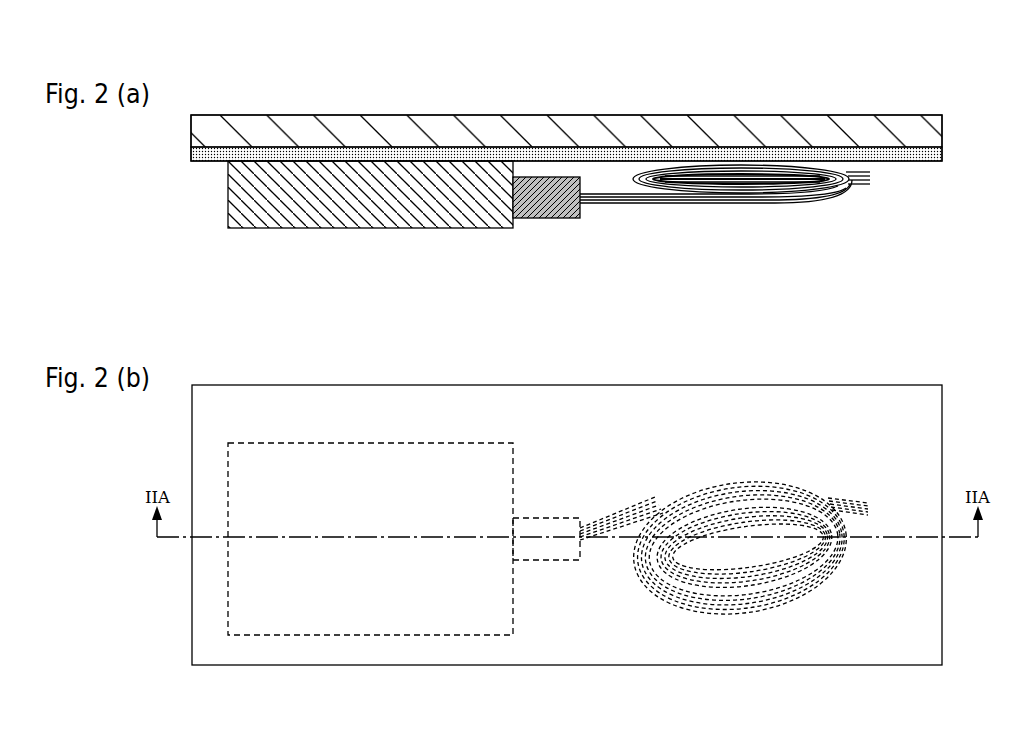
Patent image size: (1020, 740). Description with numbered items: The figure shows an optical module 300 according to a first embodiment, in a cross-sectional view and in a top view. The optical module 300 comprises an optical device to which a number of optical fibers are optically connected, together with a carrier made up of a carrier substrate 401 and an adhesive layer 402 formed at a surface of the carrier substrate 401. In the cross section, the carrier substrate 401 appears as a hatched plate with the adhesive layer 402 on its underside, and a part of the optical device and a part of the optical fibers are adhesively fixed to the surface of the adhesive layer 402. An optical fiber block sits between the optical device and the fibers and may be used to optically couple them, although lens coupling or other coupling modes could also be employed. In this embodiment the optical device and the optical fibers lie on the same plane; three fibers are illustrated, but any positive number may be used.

The optical module 300 is at (185, 117).
The carrier substrate 401 is at (922, 132).
The adhesive layer 402 is at (916, 161).